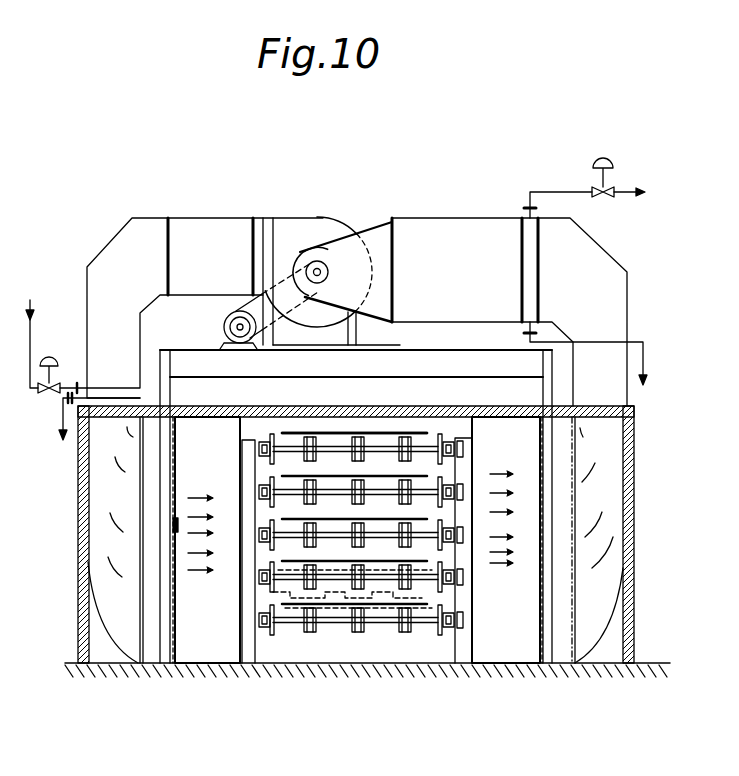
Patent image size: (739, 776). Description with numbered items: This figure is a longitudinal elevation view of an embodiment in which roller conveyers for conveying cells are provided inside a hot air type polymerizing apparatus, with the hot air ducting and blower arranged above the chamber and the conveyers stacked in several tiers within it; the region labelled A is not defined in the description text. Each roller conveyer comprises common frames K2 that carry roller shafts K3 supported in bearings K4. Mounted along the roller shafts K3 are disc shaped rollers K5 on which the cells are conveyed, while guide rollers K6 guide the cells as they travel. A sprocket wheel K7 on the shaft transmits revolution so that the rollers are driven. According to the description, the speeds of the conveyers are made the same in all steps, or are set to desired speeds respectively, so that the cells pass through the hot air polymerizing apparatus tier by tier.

The drying section / roller assembly A is at (374, 437).
The common frames K2 is at (254, 588).
The roller shafts K3 is at (427, 621).
The bearings K4 is at (450, 628).
The disc shaped rollers K5 is at (310, 632).
The guide rollers K6 is at (272, 633).
The sprocket wheel K7 is at (466, 623).